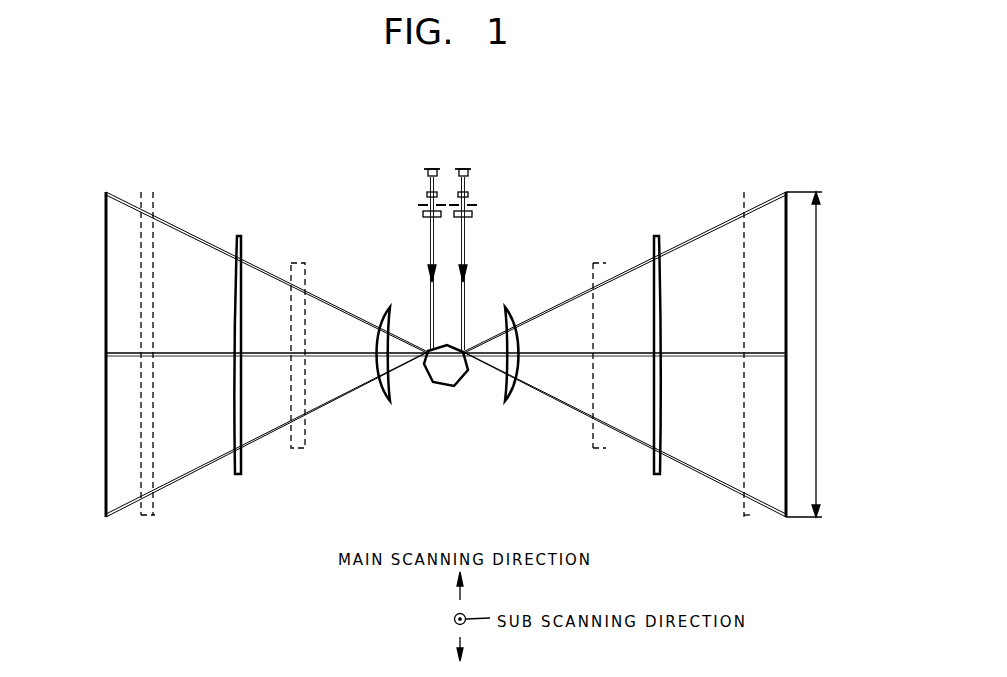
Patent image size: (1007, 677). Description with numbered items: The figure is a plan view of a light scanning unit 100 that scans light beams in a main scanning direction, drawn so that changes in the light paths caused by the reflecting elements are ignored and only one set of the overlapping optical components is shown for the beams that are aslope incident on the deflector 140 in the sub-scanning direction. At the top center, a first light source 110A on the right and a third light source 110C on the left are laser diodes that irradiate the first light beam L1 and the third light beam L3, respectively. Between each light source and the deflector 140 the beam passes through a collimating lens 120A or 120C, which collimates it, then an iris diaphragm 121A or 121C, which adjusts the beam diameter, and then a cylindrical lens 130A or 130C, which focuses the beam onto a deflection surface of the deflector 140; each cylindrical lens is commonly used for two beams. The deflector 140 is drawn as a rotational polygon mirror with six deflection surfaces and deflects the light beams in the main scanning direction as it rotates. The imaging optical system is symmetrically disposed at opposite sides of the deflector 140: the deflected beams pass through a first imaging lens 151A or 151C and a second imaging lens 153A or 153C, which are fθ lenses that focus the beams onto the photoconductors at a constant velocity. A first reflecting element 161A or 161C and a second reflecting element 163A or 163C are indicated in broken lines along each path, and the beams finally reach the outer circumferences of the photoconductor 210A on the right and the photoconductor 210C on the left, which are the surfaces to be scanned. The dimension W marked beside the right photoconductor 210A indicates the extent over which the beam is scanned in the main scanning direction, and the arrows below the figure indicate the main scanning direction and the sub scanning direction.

The light scanning unit 100 is at (274, 118).
The third light source 110C is at (431, 168).
The first light source 110A is at (464, 168).
The collimating lens 120C is at (427, 195).
The collimating lens 120A is at (468, 195).
The iris diaphragm 121C is at (418, 204).
The iris diaphragm 121A is at (477, 204).
The cylindrical lens 130C is at (424, 216).
The cylindrical lens 130A is at (462, 217).
The deflector 140 is at (447, 390).
The first imaging lens 151C is at (390, 402).
The first imaging lens 151A is at (505, 402).
The second imaging lens 153C is at (237, 235).
The second imaging lens 153A is at (656, 235).
The first reflecting element 161C is at (297, 450).
The first reflecting element 161A is at (597, 450).
The second reflecting element 163C is at (148, 517).
The second reflecting element 163A is at (752, 517).
The photoconductor 210C is at (106, 192).
The photoconductor 210A is at (786, 192).
The third light beam L3 is at (401, 263).
The first light beam L1 is at (493, 263).
The scanning width W is at (804, 354).